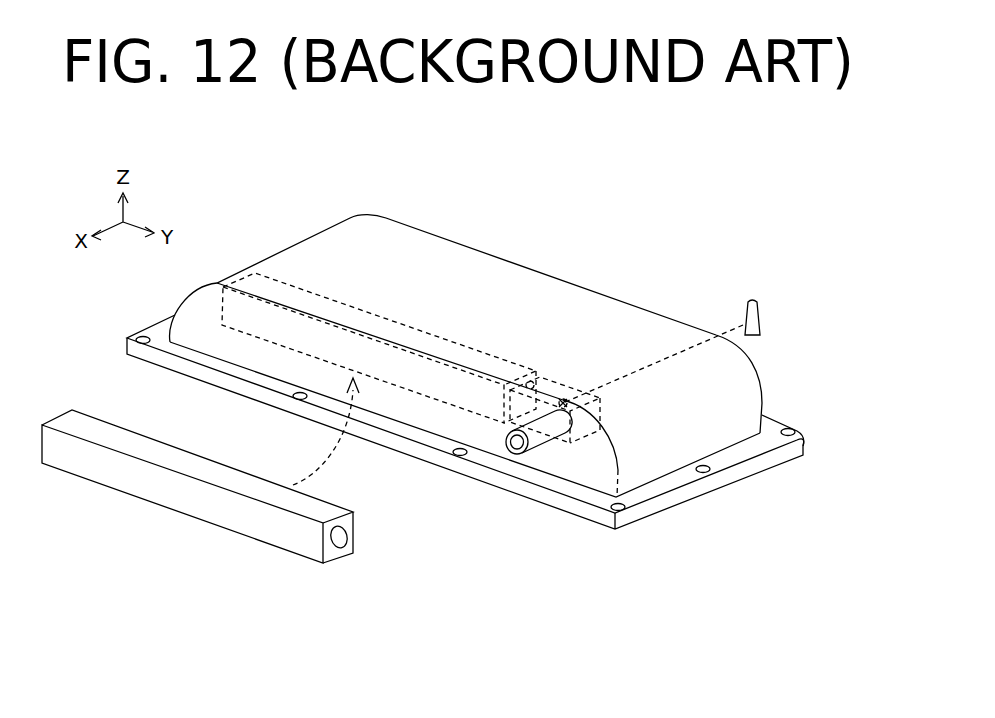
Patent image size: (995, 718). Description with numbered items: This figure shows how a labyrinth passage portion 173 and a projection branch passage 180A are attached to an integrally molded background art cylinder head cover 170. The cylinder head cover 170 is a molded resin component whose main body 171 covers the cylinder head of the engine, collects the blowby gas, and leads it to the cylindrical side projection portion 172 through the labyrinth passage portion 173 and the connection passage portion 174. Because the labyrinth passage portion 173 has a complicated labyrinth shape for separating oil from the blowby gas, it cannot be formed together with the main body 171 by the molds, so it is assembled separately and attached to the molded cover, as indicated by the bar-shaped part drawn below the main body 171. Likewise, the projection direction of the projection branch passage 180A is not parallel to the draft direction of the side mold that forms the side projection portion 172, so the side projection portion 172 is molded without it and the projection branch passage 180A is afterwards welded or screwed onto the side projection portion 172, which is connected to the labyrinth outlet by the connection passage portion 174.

The cylinder head cover 170 is at (744, 285).
The main body 171 is at (647, 343).
The side projection portion 172 is at (540, 435).
The labyrinth passage portion 173 is at (473, 353).
The connection passage portion 174 is at (530, 377).
The projection branch passage 180A is at (761, 317).